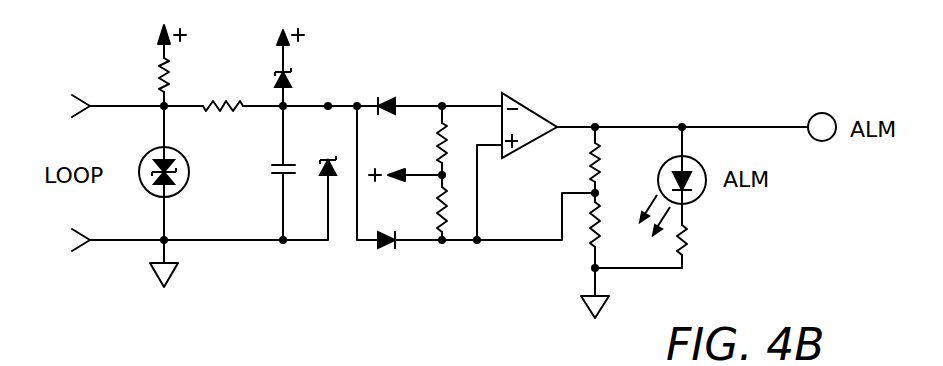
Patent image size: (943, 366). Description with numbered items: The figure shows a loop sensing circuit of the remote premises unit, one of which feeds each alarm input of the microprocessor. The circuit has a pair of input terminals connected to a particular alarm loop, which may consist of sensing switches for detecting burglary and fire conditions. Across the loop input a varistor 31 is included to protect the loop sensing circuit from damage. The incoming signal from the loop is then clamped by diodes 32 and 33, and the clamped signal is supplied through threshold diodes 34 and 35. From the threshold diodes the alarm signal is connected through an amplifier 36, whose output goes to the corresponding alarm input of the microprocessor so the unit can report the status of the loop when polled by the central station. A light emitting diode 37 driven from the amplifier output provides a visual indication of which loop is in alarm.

The varistor 31 is at (189, 165).
The diode 32 is at (291, 70).
The diode 33 is at (321, 160).
The threshold diode 34 is at (389, 100).
The threshold diode 35 is at (383, 250).
The amplifier 36 is at (532, 115).
The light emitting diode 37 is at (700, 196).